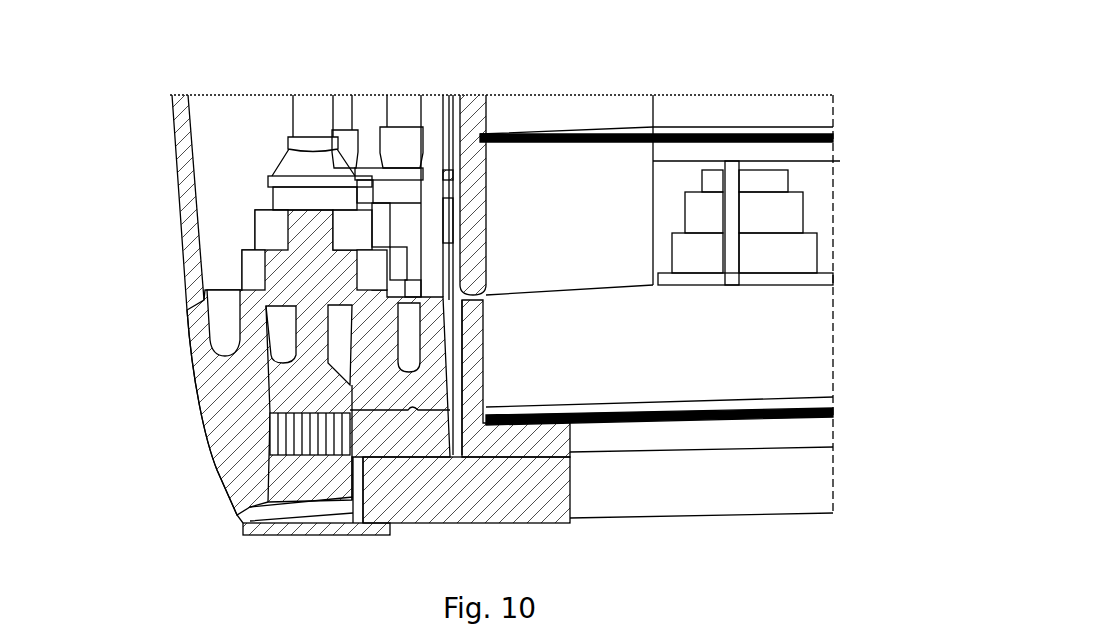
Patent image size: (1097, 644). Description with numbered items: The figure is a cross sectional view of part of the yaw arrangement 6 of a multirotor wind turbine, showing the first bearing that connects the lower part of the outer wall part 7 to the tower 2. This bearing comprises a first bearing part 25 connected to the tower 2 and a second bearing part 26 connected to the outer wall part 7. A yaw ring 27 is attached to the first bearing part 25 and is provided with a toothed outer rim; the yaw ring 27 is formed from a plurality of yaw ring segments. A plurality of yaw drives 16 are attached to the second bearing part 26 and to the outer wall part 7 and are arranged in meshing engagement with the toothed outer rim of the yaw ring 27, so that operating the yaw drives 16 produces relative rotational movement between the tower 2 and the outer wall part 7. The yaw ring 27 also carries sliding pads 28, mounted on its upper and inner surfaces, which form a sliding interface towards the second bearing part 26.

The tower 2 is at (465, 117).
The yaw arrangement 6 is at (152, 141).
The outer wall part 7 is at (195, 270).
The yaw drives 16 is at (408, 107).
The first bearing part 25 is at (422, 485).
The second bearing part 26 is at (373, 385).
The yaw ring 27 is at (385, 443).
The sliding pads 28 is at (400, 417).